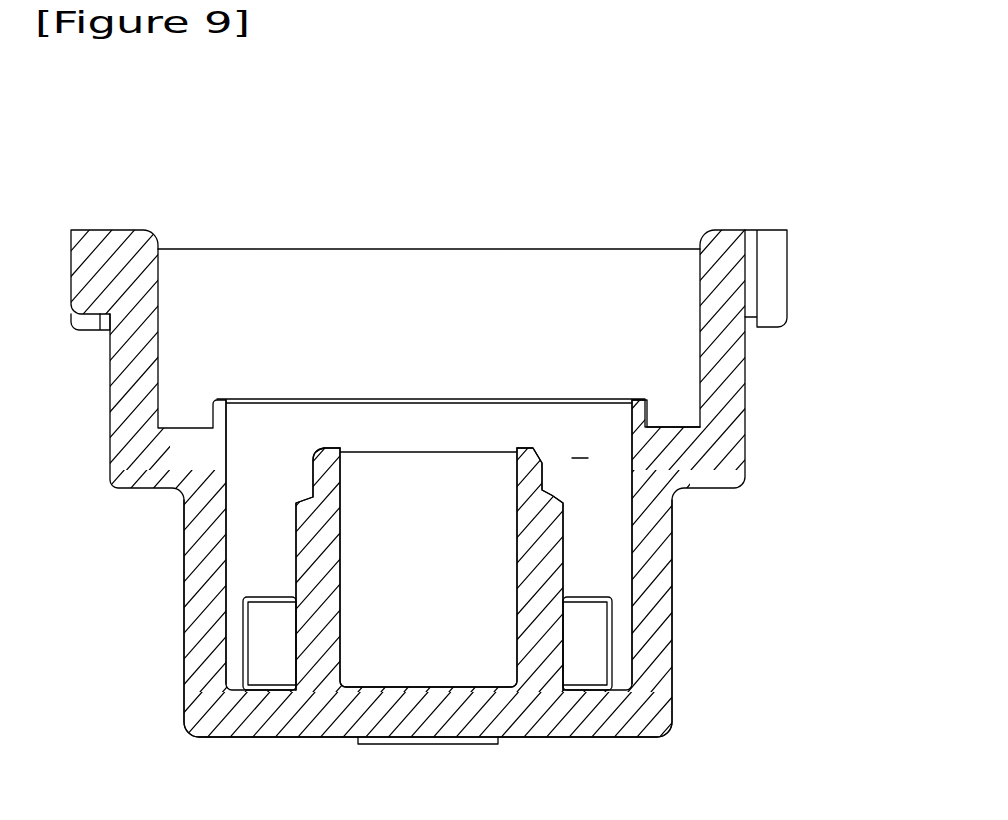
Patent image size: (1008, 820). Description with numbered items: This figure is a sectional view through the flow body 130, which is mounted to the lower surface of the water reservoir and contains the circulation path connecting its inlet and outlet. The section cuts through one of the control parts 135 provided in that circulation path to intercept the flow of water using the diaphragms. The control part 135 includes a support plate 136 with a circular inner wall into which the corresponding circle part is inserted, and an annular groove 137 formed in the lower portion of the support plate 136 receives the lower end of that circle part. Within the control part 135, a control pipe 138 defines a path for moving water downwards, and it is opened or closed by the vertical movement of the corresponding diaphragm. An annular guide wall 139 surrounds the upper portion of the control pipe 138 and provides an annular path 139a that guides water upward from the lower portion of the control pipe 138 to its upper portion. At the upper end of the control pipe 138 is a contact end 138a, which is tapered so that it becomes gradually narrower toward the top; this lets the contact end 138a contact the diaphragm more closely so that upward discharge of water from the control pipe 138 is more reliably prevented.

The flow body 130 is at (356, 93).
The control part 135 is at (710, 605).
The support plate 136 is at (747, 362).
The annular groove 137 is at (672, 422).
The control pipe 138 is at (543, 477).
The contact end 138a is at (523, 447).
The annular guide wall 139 is at (633, 451).
The annular path 139a is at (583, 458).